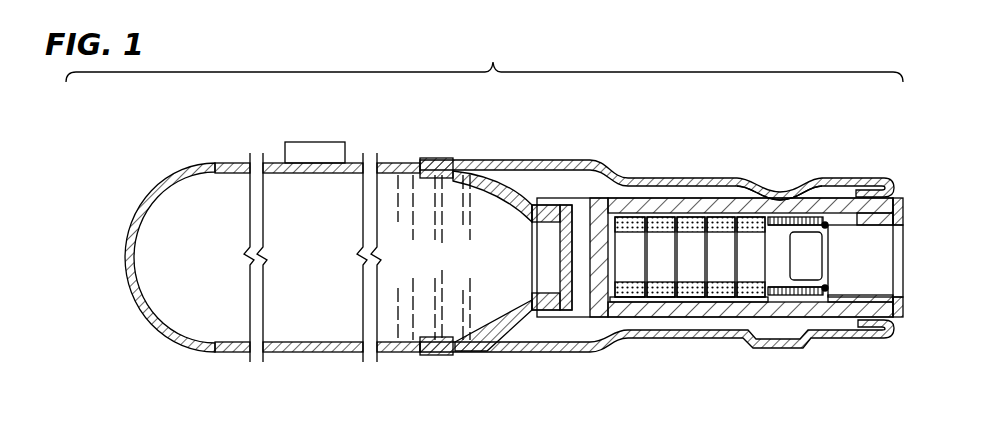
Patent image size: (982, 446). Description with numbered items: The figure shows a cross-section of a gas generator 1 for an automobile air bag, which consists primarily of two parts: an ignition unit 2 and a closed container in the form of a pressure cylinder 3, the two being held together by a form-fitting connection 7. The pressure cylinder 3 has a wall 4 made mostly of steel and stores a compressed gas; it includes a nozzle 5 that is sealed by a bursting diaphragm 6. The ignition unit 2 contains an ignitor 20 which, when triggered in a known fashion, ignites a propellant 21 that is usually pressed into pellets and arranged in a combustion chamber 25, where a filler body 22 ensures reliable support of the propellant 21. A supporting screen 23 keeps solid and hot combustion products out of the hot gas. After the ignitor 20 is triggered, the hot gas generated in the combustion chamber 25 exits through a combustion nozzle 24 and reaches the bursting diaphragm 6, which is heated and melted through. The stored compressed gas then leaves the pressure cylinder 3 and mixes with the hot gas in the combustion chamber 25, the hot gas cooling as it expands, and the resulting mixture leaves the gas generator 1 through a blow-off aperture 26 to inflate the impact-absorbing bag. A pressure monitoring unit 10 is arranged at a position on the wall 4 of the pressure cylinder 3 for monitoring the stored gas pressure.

The gas generator 1 is at (484, 56).
The ignition unit 2 is at (710, 170).
The pressure cylinder 3 is at (135, 204).
The wall 4 is at (212, 321).
The nozzle 5 is at (551, 288).
The bursting diaphragm 6 is at (565, 258).
The form-fitting connection 7 is at (444, 162).
The pressure monitoring unit 10 is at (315, 149).
The ignitor 20 is at (848, 282).
The propellant 21 is at (723, 295).
The filler body 22 is at (826, 222).
The supporting screen 23 is at (600, 222).
The combustion nozzle 24 is at (636, 305).
The combustion chamber 25 is at (692, 312).
The blow-off aperture 26 is at (783, 190).